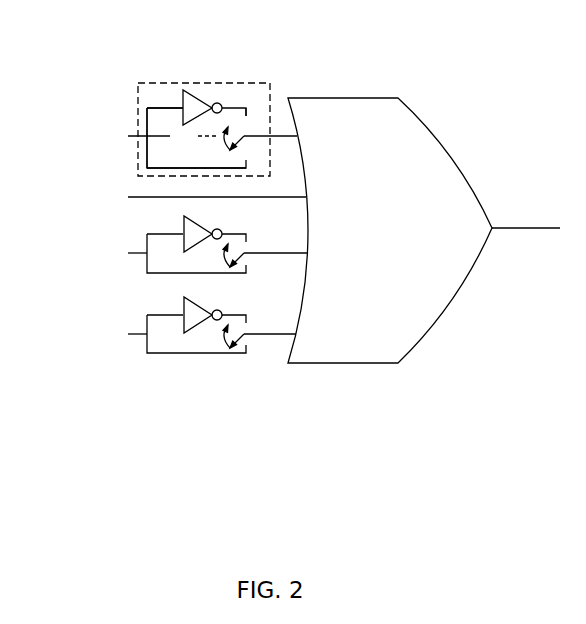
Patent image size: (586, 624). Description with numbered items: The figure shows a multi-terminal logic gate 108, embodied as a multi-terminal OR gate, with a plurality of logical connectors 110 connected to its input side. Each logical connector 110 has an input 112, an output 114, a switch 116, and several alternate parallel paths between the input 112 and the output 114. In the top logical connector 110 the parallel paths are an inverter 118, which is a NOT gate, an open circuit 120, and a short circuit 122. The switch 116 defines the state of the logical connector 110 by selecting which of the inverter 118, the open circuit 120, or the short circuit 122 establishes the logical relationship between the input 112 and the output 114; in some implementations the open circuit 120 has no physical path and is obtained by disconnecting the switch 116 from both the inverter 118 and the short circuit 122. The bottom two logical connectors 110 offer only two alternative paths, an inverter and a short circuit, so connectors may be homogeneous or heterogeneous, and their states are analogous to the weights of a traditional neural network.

The multi-terminal logic gate 108 is at (363, 98).
The logical connector 110 is at (168, 83).
The input 112 is at (132, 136).
The output 114 is at (280, 136).
The switch 116 is at (253, 112).
The inverter 118 is at (193, 90).
The open circuit 120 is at (175, 120).
The short circuit 122 is at (170, 168).